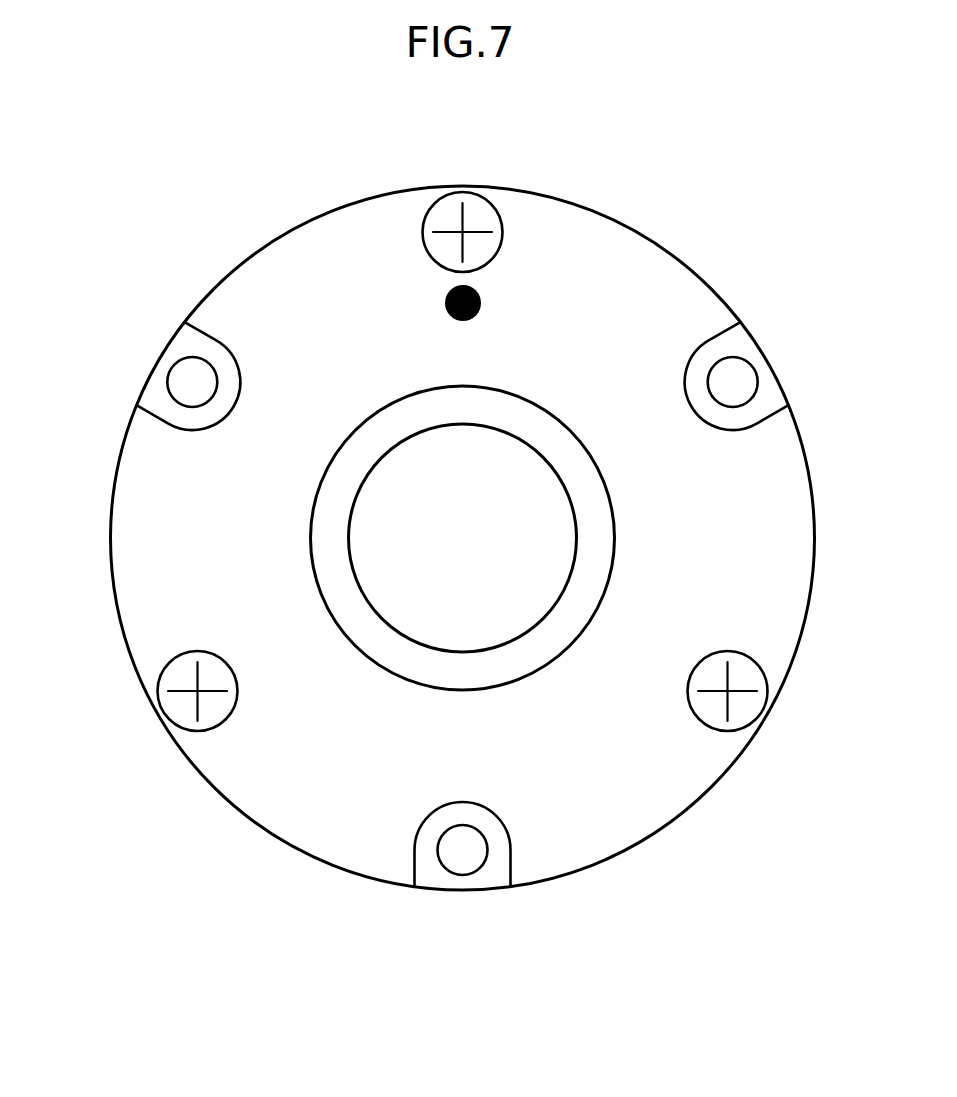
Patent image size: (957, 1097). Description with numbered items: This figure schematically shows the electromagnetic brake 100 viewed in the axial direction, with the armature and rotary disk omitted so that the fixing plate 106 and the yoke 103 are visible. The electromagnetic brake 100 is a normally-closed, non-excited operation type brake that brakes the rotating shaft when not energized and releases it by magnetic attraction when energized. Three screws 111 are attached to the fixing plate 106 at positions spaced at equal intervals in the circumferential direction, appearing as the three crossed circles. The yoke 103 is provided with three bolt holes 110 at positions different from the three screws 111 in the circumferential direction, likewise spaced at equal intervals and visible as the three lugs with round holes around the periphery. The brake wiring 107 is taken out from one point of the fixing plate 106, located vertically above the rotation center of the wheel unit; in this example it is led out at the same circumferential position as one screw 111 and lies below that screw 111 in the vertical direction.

The electromagnetic brake 100 is at (632, 168).
The yoke 103 is at (197, 343).
The fixing plate 106 is at (628, 312).
The brake wiring 107 is at (443, 302).
The bolt holes 110 is at (192, 400).
The screws 111 is at (503, 228).